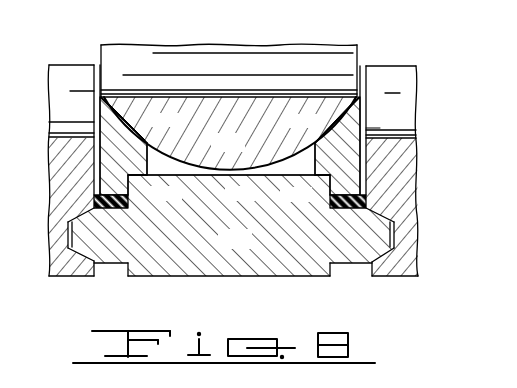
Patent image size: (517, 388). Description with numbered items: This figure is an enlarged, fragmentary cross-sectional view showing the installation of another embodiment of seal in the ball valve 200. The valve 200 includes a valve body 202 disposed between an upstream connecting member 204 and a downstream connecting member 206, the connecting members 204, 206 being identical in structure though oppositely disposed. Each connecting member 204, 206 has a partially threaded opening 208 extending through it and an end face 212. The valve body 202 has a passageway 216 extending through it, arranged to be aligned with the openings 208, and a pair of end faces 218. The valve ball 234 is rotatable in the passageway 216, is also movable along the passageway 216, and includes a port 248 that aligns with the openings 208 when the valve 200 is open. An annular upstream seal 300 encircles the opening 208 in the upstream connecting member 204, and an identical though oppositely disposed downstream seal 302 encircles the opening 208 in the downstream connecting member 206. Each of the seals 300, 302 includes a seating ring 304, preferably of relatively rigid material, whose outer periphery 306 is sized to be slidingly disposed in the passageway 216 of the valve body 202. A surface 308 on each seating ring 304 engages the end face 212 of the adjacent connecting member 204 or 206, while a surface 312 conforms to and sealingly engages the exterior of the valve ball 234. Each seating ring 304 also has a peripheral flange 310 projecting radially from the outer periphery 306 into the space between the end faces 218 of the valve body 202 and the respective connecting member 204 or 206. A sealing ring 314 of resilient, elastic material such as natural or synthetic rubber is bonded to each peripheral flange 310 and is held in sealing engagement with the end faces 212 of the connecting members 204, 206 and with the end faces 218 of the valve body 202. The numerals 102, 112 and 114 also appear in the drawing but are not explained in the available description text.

The ball valve 200 is at (376, 48).
The valve body 202 is at (250, 247).
The upstream connecting member 204 is at (72, 265).
The downstream connecting member 206 is at (378, 268).
The partially threaded opening 208 is at (67, 72).
The end face 212 is at (100, 162).
The passageway 216 is at (219, 173).
The end face 218 is at (128, 265).
The valve ball 234 is at (243, 150).
The port 248 is at (245, 73).
The upstream seal 300 is at (108, 124).
The downstream seal 302 is at (410, 120).
The seating ring 304 is at (140, 163).
The outer periphery 306 is at (135, 183).
The surface 308 is at (97, 147).
The peripheral flange 310 is at (102, 178).
The surface 312 is at (126, 121).
The sealing ring 314 is at (93, 212).
The base structure 102 is at (0, 185).
The wall layer 112 is at (0, 157).
The lower structure 114 is at (0, 205).